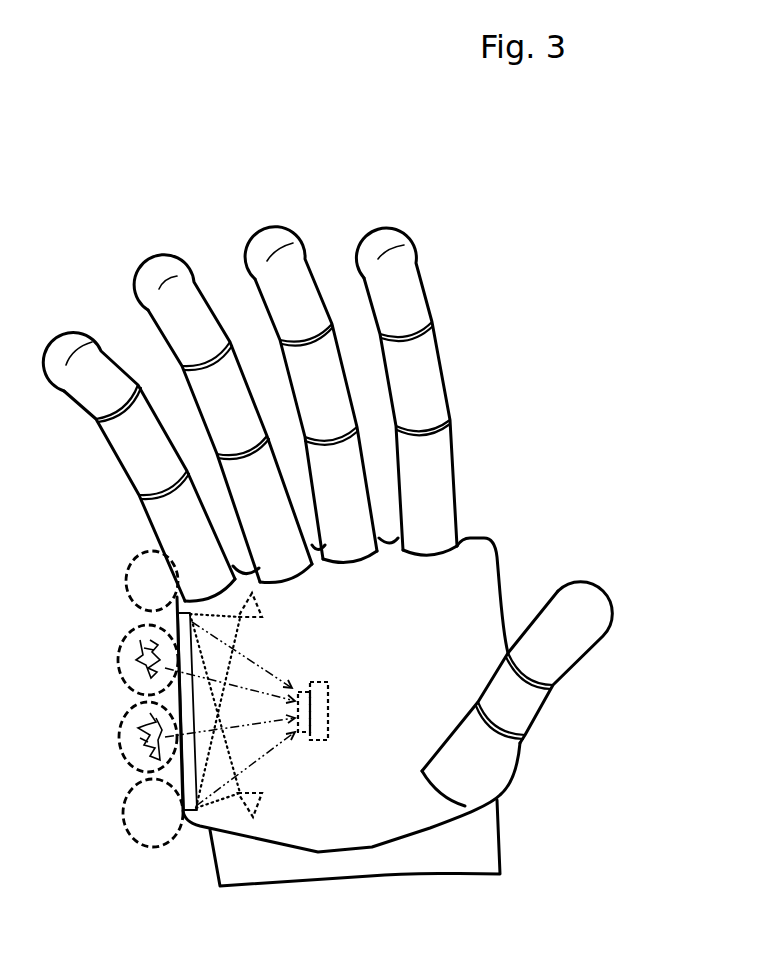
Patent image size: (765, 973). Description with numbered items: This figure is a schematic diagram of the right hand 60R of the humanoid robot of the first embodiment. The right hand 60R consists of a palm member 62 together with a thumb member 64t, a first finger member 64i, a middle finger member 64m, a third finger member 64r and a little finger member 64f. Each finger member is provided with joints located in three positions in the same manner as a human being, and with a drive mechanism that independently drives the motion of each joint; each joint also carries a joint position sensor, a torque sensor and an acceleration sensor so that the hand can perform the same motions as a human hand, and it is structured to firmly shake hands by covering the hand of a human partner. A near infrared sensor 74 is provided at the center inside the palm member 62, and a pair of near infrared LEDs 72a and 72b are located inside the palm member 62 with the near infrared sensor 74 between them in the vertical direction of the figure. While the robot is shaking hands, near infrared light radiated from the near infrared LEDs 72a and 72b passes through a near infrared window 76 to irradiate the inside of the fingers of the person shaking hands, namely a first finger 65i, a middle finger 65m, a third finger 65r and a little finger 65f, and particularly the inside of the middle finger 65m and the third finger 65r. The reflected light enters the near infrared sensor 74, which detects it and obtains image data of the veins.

The right hand 60R is at (552, 364).
The palm member 62 is at (390, 802).
The little finger member 64f is at (93, 367).
The third finger member 64r is at (162, 289).
The middle finger member 64m is at (285, 227).
The first finger member 64i is at (412, 265).
The thumb member 64t is at (585, 598).
The little finger 65f is at (127, 573).
The third finger 65r is at (118, 656).
The middle finger 65m is at (121, 735).
The first finger 65i is at (123, 820).
The near infrared LED 72a is at (263, 610).
The near infrared LED 72b is at (264, 800).
The near infrared sensor 74 is at (329, 700).
The near infrared window 76 is at (185, 818).